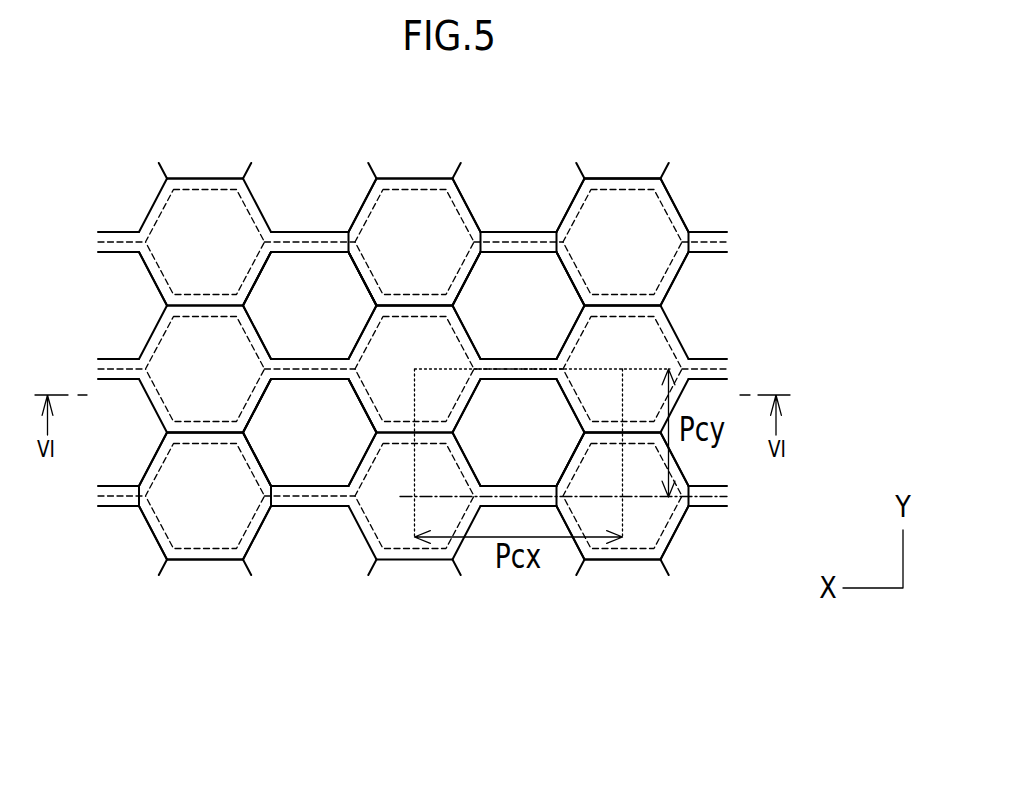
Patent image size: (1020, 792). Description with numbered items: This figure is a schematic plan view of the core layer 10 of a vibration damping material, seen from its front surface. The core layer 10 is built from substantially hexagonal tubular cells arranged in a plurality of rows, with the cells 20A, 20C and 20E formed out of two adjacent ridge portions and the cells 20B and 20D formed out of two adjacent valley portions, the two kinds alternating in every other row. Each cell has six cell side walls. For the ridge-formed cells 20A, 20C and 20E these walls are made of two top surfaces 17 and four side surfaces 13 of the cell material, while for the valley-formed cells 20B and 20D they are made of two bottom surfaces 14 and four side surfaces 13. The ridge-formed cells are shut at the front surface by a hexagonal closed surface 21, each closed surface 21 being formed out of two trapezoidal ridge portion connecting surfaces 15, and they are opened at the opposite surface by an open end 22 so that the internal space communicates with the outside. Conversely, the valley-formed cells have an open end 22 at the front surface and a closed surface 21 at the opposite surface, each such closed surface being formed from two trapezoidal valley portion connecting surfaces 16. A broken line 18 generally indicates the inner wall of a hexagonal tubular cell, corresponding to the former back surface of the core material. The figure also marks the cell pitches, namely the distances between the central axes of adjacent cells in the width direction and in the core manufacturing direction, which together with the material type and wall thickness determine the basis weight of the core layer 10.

The core layer 10 is at (760, 167).
The side surface 13 is at (263, 254).
The bottom surface 14 is at (326, 253).
The ridge portion connecting surface 15 is at (203, 203).
The valley portion connecting surface 16 is at (306, 300).
The top surface 17 is at (166, 303).
The broken line 18 is at (621, 188).
The cell 20A is at (179, 514).
The cell 20B is at (265, 448).
The cell 20C is at (408, 208).
The cell 20D is at (517, 269).
The cell 20E is at (634, 231).
The closed surface 21 is at (655, 521).
The open end 22 is at (528, 396).